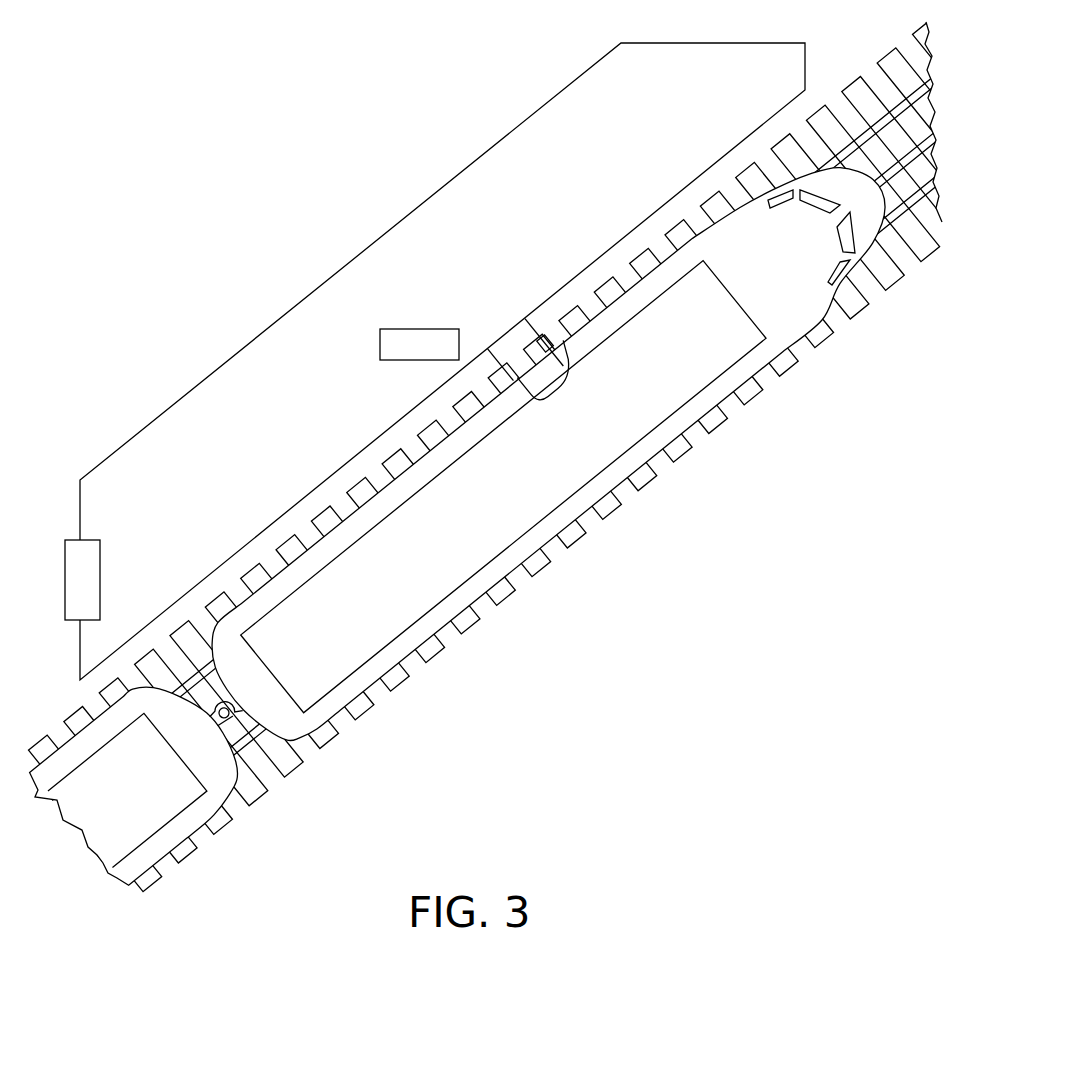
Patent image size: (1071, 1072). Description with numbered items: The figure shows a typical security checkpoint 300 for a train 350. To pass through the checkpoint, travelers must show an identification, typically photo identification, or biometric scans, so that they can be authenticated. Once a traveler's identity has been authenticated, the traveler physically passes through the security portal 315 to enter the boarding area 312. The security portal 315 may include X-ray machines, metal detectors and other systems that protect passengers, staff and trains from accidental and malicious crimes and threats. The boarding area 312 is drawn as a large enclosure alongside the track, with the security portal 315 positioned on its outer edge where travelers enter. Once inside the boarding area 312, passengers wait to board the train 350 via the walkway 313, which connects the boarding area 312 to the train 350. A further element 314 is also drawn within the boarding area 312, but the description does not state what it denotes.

The rail car inspection system 300 is at (240, 96).
The housing panel 312 is at (204, 382).
The latch 313 is at (528, 320).
The sensor module 314 is at (420, 328).
The sensor module 315 is at (102, 566).
The rail car 350 is at (550, 545).